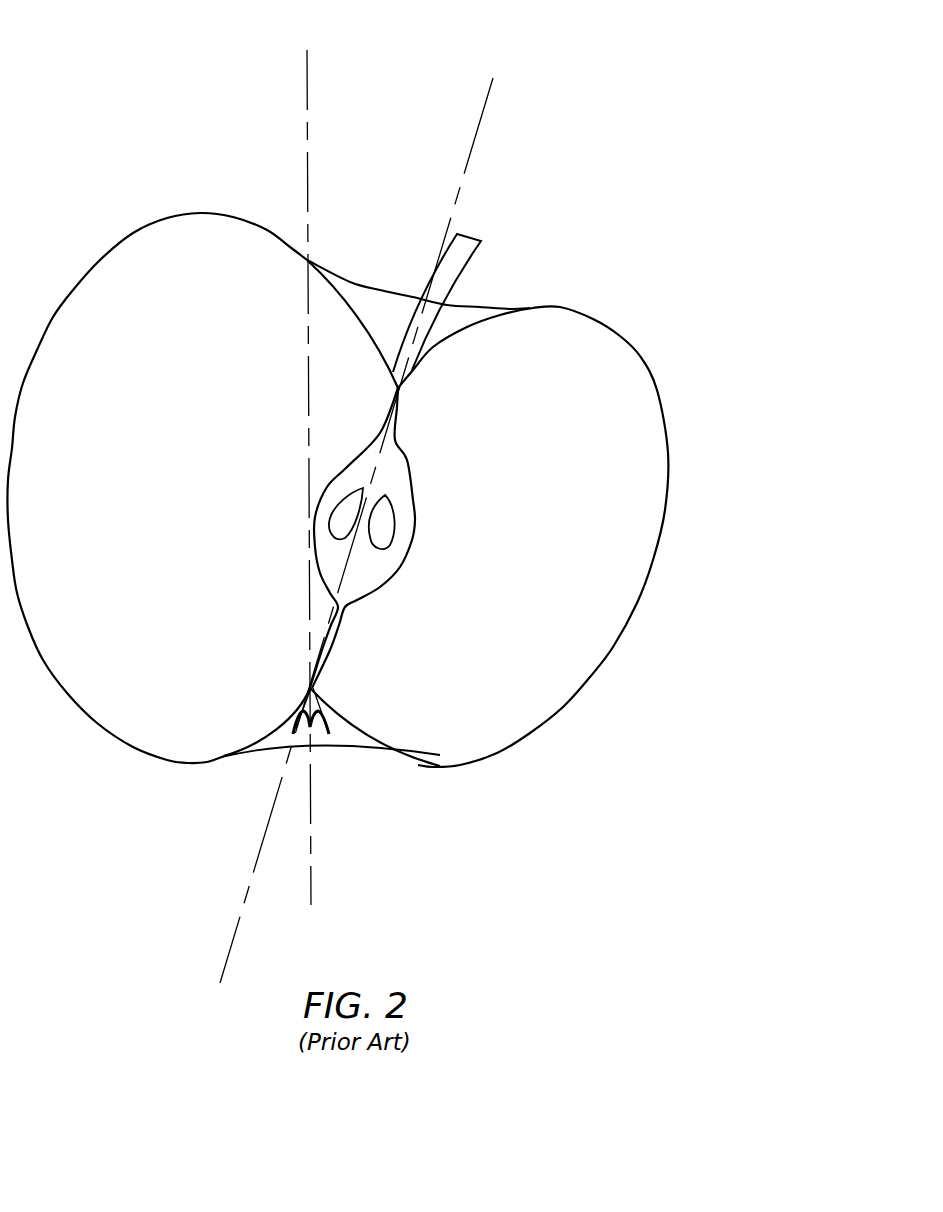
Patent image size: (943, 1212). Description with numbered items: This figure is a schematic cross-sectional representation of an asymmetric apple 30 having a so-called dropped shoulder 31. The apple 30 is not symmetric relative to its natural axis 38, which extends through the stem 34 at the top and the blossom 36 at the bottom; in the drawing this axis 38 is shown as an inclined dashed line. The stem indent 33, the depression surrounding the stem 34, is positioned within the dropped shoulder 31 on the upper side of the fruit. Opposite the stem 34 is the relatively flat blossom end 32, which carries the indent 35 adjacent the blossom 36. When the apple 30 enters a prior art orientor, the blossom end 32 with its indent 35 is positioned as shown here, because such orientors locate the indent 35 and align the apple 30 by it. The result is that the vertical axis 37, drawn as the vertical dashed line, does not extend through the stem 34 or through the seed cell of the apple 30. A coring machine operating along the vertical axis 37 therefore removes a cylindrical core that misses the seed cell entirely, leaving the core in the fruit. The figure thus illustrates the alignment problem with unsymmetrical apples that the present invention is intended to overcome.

The asymmetric apple 30 is at (386, 516).
The dropped shoulder 31 is at (368, 265).
The blossom end 32 is at (233, 755).
The stem indent 33 is at (482, 308).
The stem 34 is at (459, 236).
The indent 35 is at (283, 732).
The blossom 36 is at (330, 738).
The vertical axis 37 is at (320, 67).
The axis 38 is at (503, 102).